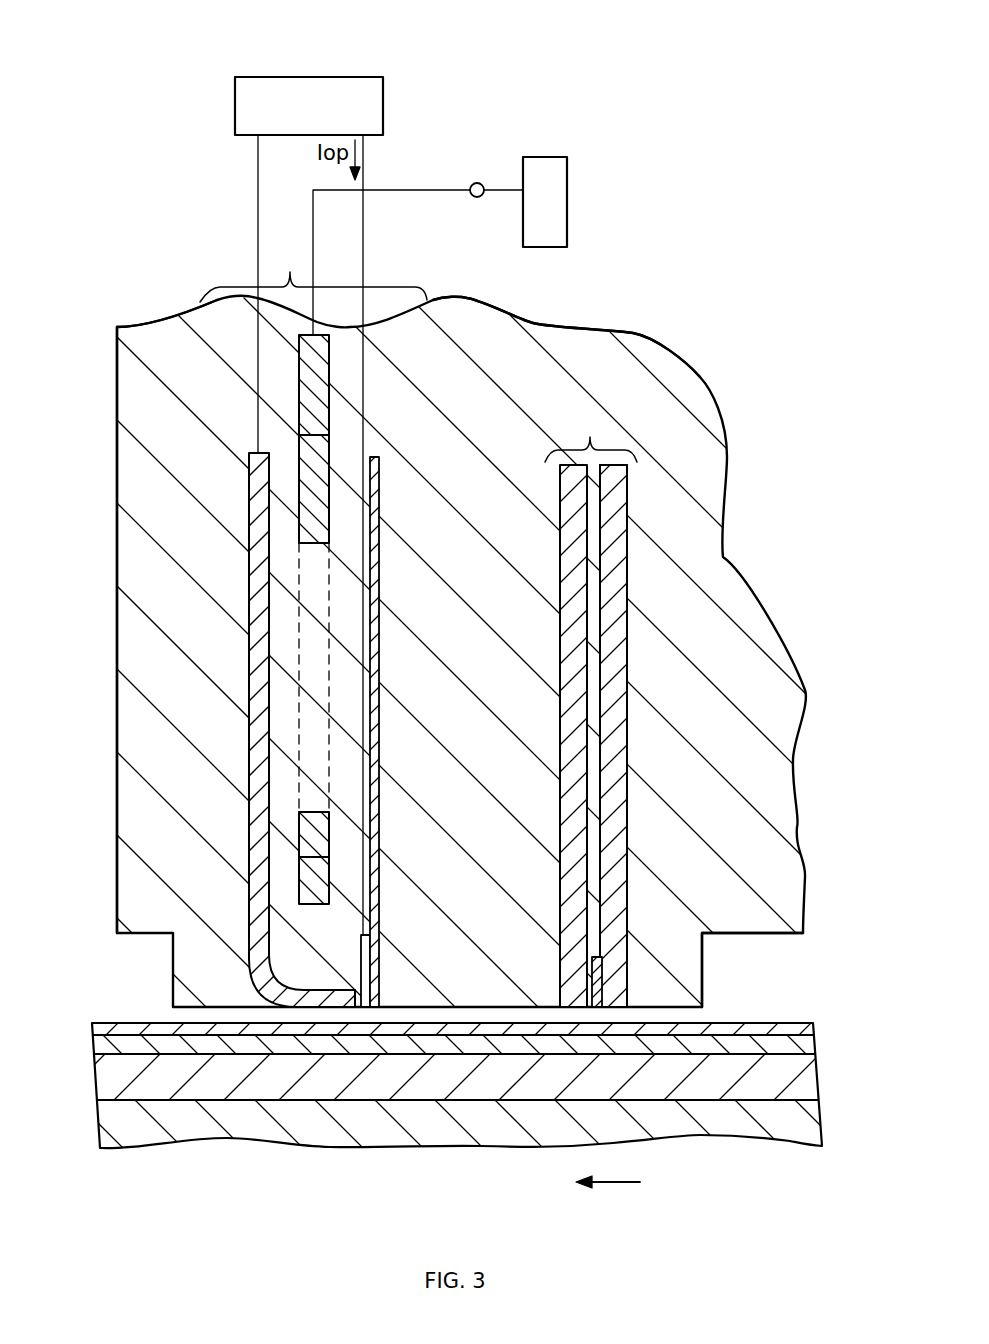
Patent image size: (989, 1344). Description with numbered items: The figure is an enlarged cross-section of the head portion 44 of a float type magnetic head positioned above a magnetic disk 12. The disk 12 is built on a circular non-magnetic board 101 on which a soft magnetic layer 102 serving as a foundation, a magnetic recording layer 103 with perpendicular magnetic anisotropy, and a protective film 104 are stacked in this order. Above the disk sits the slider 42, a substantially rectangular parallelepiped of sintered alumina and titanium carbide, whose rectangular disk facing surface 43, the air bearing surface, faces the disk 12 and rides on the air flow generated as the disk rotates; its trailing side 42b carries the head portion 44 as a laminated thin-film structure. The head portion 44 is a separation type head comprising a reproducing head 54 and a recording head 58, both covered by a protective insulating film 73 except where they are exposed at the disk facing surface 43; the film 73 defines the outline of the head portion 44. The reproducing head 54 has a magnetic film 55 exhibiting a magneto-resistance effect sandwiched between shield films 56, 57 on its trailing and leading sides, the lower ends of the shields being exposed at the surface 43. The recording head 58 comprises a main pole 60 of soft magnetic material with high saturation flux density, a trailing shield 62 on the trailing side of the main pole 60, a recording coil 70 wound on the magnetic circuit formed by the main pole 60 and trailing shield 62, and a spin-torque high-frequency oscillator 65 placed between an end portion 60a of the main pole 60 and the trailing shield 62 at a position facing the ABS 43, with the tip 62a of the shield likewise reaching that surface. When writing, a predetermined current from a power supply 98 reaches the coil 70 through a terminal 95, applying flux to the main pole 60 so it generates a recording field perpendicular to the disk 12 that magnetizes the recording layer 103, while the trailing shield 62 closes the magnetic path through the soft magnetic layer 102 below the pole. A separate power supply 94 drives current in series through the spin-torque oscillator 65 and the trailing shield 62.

The magnetic disk 12 is at (213, 1150).
The slider 42 is at (710, 440).
The trailing end surface of slider 42b is at (118, 562).
The disk facing surface 43 is at (738, 936).
The head portion 44 is at (592, 348).
The reproducing head 54 is at (591, 435).
The magnetic film 55 is at (598, 968).
The shield film 56 is at (615, 668).
The shield film 57 is at (628, 598).
The recording head 58 is at (313, 273).
The main pole 60 is at (380, 862).
The end portion of the main pole 60a is at (378, 1010).
The trailing shield 62 is at (248, 773).
The tip of main magnetic pole 62a is at (298, 1009).
The high-frequency oscillator 65 is at (365, 1010).
The recording coil 70 is at (308, 453).
The protective insulating film 73 is at (136, 334).
The power supply 94 is at (235, 100).
The terminal 95 is at (478, 183).
The power supply 98 is at (567, 172).
The board 101 is at (100, 1128).
The soft magnetic layer 102 is at (95, 1078).
The magnetic recording layer 103 is at (95, 1045).
The protective film 104 is at (92, 1028).